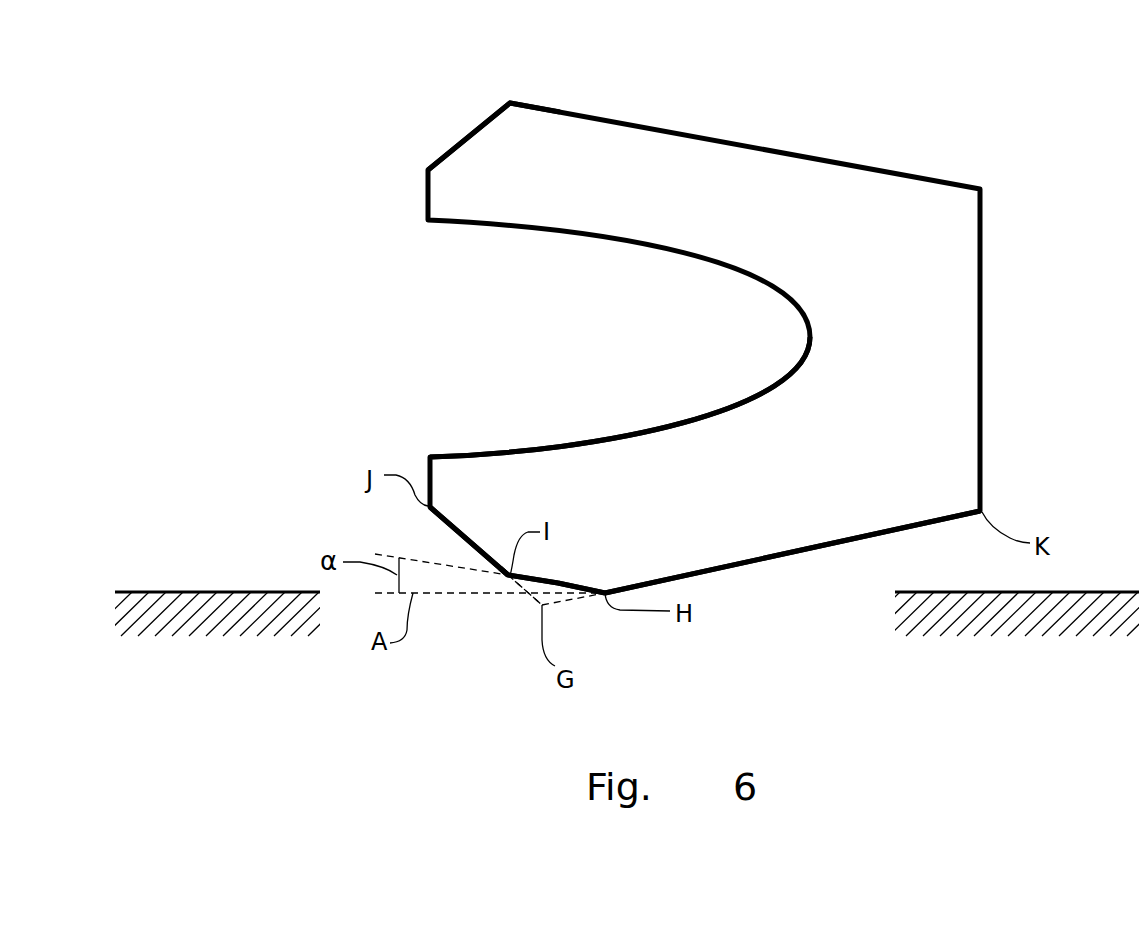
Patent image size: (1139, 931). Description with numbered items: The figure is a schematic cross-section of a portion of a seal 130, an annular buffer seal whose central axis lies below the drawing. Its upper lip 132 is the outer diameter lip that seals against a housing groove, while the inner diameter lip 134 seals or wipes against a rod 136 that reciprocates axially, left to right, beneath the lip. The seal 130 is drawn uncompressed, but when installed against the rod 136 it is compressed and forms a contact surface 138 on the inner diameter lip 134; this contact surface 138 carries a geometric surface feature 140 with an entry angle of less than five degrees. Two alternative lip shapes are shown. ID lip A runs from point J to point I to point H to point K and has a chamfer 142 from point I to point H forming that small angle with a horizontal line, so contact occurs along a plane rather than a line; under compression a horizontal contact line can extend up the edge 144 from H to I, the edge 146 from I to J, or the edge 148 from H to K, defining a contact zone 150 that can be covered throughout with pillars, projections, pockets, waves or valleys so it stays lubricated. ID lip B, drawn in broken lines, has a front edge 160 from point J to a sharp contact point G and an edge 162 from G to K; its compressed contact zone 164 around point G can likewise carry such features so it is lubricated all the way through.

The seal 130 is at (795, 119).
The upper lip 132 is at (508, 102).
The inner diameter lip 134 is at (450, 457).
The rod 136 is at (175, 592).
The contact surface 138 is at (557, 583).
The geometric surface feature 140 is at (500, 574).
The chamfer 142 is at (523, 590).
The edge 144 is at (585, 591).
The edge 146 is at (447, 527).
The edge 148 is at (793, 556).
The contact surface or contact zone 150 is at (525, 628).
The front edge 160 is at (518, 600).
The edge 162 is at (578, 604).
The contact surface or contact zone 164 is at (566, 620).